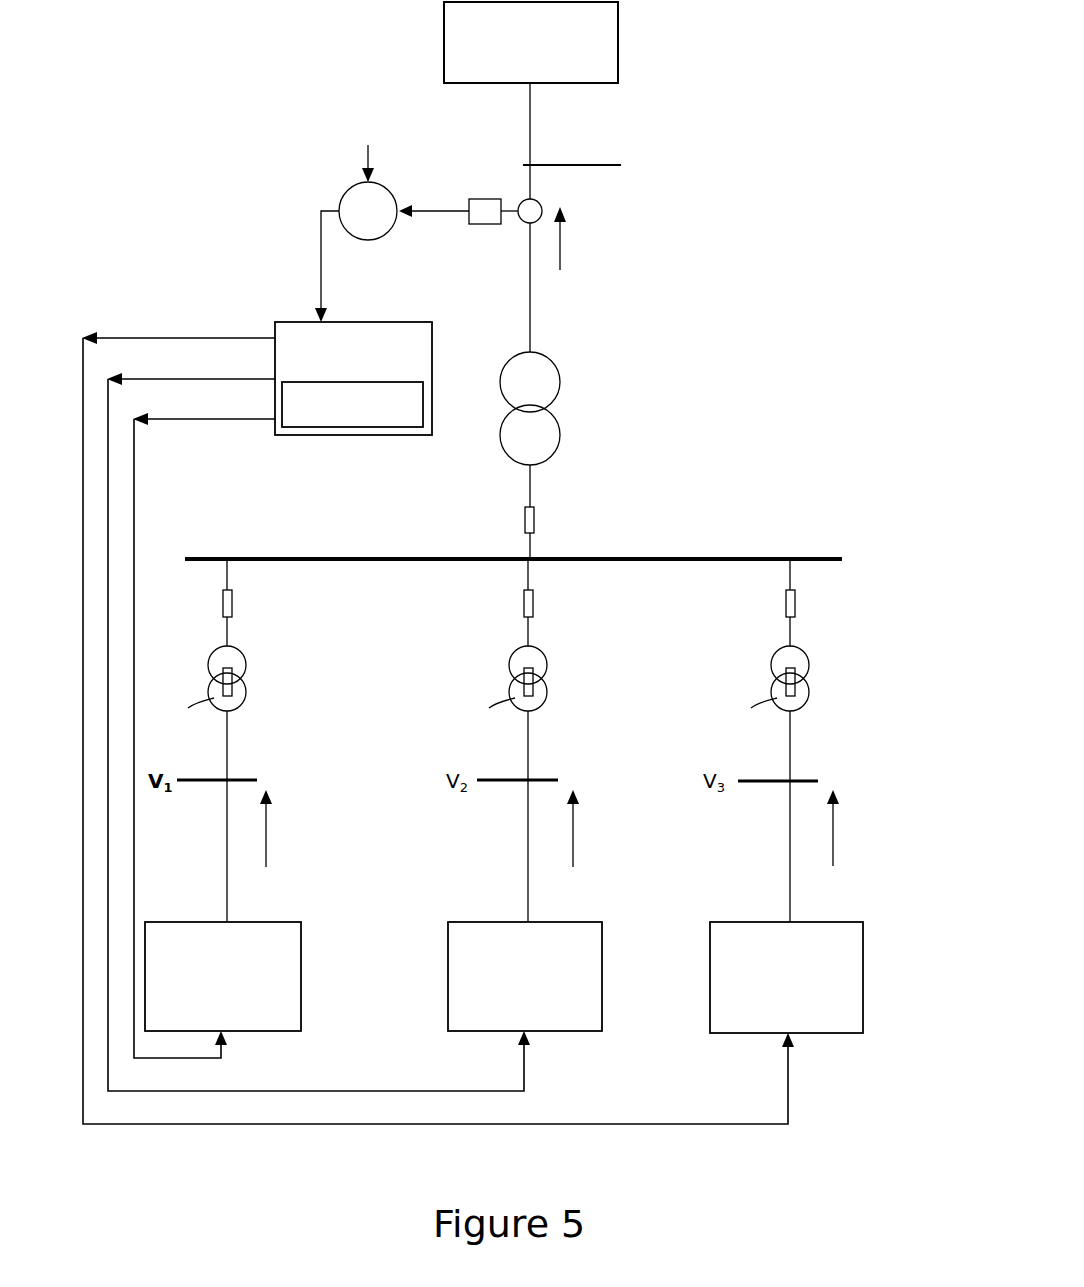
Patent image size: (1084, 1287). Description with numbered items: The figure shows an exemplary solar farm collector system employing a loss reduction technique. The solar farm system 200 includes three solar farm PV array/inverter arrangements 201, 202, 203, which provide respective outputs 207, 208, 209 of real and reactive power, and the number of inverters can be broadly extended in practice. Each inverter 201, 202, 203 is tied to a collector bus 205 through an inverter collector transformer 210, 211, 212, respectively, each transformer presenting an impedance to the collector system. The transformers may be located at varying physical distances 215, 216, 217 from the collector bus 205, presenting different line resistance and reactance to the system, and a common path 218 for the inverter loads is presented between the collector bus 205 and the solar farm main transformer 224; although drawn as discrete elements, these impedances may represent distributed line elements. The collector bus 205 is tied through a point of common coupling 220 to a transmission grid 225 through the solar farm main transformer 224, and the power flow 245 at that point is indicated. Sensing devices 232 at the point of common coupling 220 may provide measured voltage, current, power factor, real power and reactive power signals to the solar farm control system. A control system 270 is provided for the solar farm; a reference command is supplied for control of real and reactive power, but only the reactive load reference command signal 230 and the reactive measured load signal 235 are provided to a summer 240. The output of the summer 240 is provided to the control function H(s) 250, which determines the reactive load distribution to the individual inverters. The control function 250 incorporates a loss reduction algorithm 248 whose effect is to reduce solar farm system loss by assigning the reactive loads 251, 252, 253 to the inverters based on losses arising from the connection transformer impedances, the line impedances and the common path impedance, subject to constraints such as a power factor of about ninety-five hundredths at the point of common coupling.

The solar farm system 200 is at (821, 259).
The PV array/inverter arrangement 201 is at (302, 956).
The PV array/inverter arrangement 202 is at (603, 956).
The PV array/inverter arrangement 203 is at (865, 956).
The collector bus 205 is at (752, 558).
The inverter output P1+jQ1 207 is at (267, 818).
The inverter output P2+jQ2 208 is at (574, 818).
The inverter output P3+jQ3 209 is at (834, 818).
The inverter collector transformer 210 is at (246, 652).
The inverter collector transformer 211 is at (547, 652).
The inverter collector transformer 212 is at (809, 652).
The physical distance (line impedance Z4) 215 is at (230, 568).
The physical distance (line impedance Z5) 216 is at (531, 568).
The physical distance (line impedance Z6) 217 is at (793, 568).
The common path impedance Z7 218 is at (534, 520).
The point of common coupling (POCC) 220 is at (610, 165).
The solar farm main transformer 224 is at (560, 380).
The transmission grid 225 is at (619, 34).
The reactive load reference command signal QREF 230 is at (347, 146).
The sensing devices 232 is at (486, 198).
The reactive measured load signal QM 235 is at (434, 213).
The summer 240 is at (371, 201).
The power flow at point of common coupling 245 is at (560, 252).
The loss reduction algorithm 248 is at (309, 425).
The control function H(s) 250 is at (407, 437).
The reactive load Q1 251 is at (204, 722).
The reactive load Q2 252 is at (318, 718).
The reactive load Q3 253 is at (438, 714).
The control system 270 is at (184, 161).